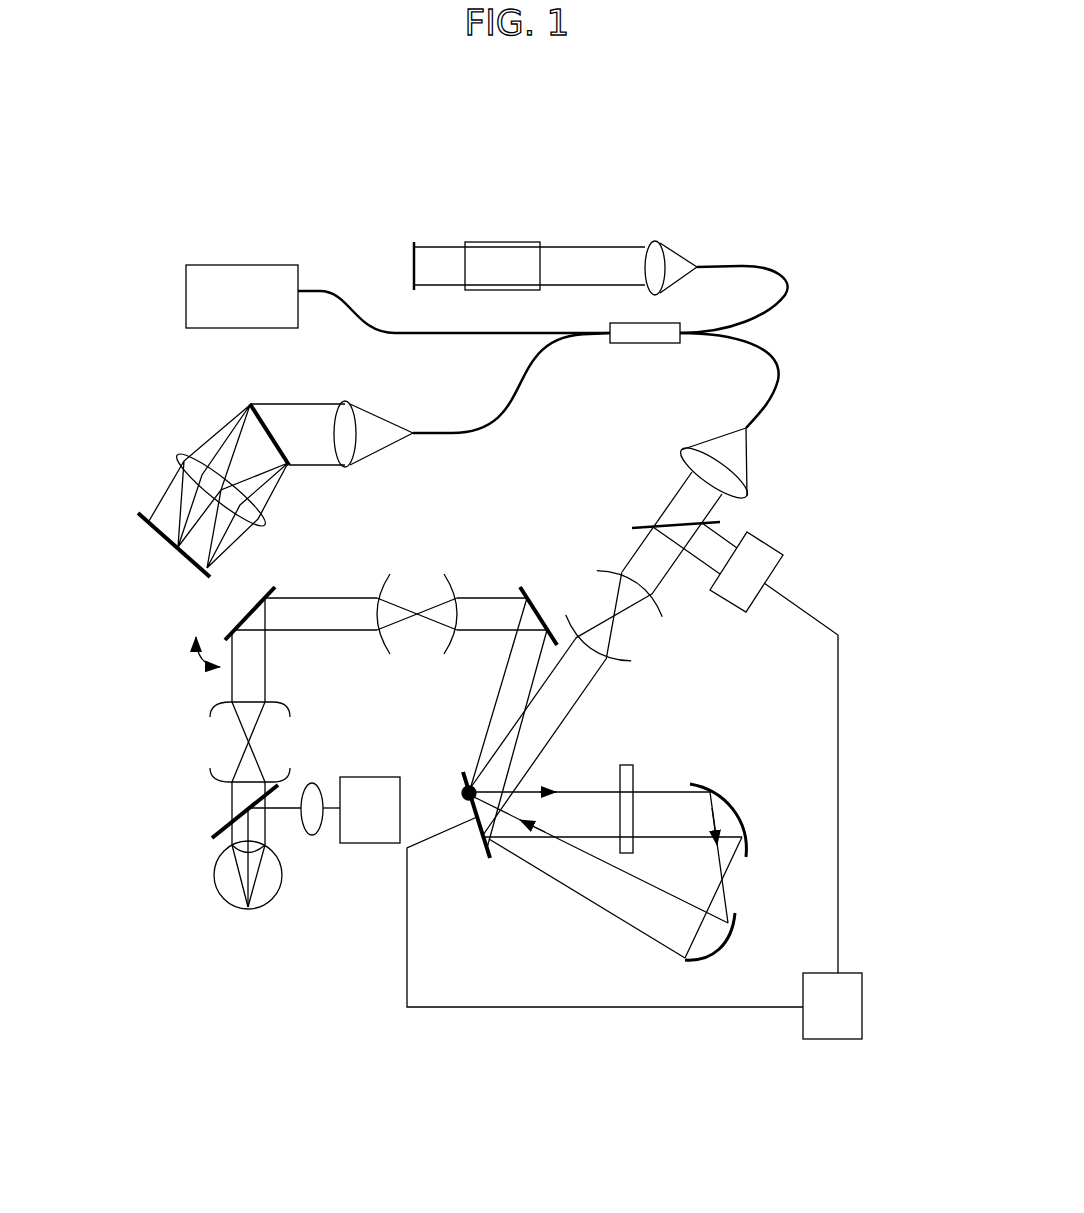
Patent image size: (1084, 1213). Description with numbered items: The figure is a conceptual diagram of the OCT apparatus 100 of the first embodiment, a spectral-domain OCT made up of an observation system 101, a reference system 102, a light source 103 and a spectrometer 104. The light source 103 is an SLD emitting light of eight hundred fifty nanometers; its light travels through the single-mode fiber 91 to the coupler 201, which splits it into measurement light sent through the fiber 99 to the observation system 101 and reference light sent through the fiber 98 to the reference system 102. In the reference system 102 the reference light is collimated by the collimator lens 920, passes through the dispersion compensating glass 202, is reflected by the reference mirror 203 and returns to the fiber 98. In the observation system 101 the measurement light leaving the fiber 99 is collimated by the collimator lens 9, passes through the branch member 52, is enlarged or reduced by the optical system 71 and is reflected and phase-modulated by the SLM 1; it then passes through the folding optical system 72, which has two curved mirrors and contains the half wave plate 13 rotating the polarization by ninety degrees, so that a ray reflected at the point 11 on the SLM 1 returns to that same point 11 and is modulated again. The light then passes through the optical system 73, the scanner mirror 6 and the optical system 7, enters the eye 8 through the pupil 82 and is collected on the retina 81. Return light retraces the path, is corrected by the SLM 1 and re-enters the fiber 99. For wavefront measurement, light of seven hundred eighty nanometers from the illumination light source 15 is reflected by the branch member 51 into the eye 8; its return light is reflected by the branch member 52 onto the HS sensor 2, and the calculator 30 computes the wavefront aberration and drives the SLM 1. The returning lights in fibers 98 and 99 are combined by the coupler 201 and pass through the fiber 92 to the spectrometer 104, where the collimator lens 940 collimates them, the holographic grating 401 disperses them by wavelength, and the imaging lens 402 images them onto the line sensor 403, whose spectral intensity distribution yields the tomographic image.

The ophthalmic apparatus 100 is at (700, 150).
The observation system 101 is at (535, 897).
The reference system 102 is at (583, 233).
The light source 103 is at (228, 272).
The spectrometer 104 is at (186, 428).
The SLM 1 is at (485, 856).
The point on the SLM 11 is at (465, 793).
The half wave plate 13 is at (626, 765).
The folding optical system 72 is at (740, 886).
The HS sensor 2 is at (762, 553).
The branch member 52 is at (642, 527).
The collimator lens 9 is at (742, 476).
The optical system 71 is at (642, 657).
The optical system 73 is at (416, 590).
The scanner mirror 6 is at (268, 596).
The optical system 7 is at (218, 742).
The branch member 51 is at (228, 818).
The illumination light source 15 is at (360, 777).
The eye 8 is at (272, 882).
The retina 81 is at (248, 910).
The pupil 82 is at (235, 845).
The single-mode fiber 91 is at (411, 335).
The fiber 92 is at (450, 435).
The fiber 98 is at (786, 293).
The fiber 99 is at (782, 380).
The coupler 201 is at (628, 344).
The dispersion compensating glass 202 is at (482, 247).
The reference mirror 203 is at (412, 250).
The collimator lens 920 is at (655, 242).
The collimator lens 940 is at (342, 402).
The holographic grating 401 is at (262, 404).
The imaging lens 402 is at (182, 462).
The line sensor 403 is at (172, 545).
The calculator 30 is at (864, 1002).